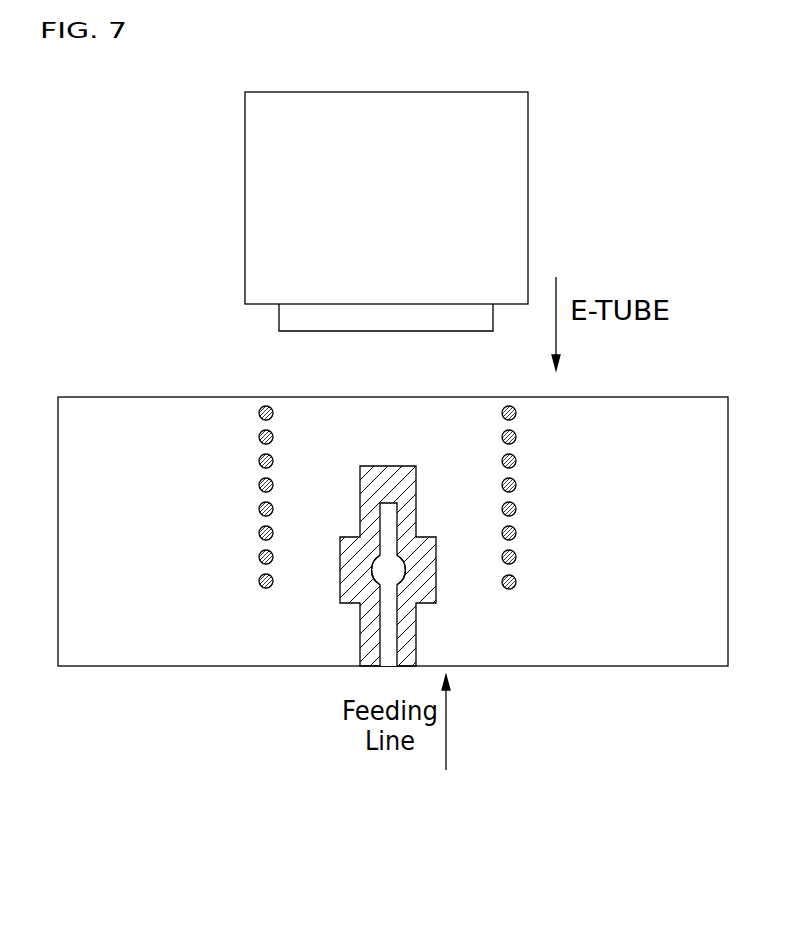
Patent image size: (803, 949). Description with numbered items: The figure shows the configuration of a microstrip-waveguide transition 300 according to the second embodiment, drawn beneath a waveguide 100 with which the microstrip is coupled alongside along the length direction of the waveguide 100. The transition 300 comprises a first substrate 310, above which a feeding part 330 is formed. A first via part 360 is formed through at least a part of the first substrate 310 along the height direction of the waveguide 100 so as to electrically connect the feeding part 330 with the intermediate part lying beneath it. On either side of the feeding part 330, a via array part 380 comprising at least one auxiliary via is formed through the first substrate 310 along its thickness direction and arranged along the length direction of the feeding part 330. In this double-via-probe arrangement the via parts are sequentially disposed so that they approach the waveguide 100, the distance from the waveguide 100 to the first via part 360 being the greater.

The waveguide 100 is at (265, 193).
The microstrip-waveguide transition 300 is at (123, 415).
The first substrate 310 is at (350, 578).
The feeding part 330 is at (387, 629).
The first via part 360 is at (392, 567).
The via array part 380 is at (258, 558).